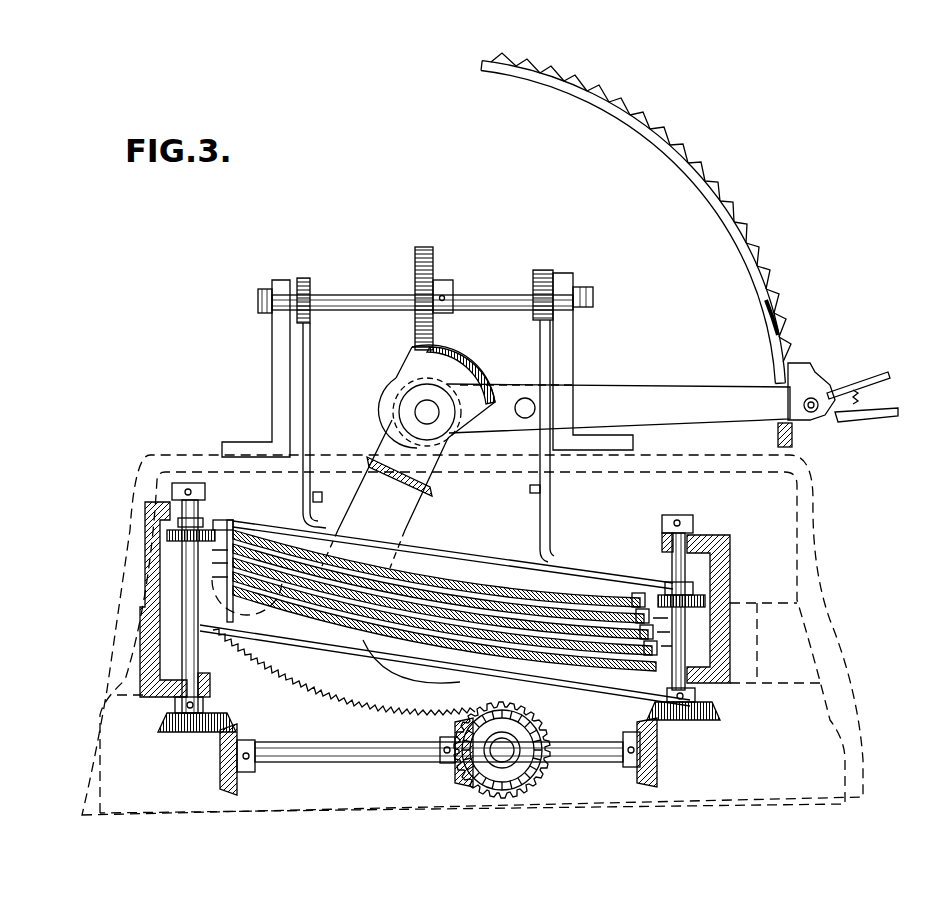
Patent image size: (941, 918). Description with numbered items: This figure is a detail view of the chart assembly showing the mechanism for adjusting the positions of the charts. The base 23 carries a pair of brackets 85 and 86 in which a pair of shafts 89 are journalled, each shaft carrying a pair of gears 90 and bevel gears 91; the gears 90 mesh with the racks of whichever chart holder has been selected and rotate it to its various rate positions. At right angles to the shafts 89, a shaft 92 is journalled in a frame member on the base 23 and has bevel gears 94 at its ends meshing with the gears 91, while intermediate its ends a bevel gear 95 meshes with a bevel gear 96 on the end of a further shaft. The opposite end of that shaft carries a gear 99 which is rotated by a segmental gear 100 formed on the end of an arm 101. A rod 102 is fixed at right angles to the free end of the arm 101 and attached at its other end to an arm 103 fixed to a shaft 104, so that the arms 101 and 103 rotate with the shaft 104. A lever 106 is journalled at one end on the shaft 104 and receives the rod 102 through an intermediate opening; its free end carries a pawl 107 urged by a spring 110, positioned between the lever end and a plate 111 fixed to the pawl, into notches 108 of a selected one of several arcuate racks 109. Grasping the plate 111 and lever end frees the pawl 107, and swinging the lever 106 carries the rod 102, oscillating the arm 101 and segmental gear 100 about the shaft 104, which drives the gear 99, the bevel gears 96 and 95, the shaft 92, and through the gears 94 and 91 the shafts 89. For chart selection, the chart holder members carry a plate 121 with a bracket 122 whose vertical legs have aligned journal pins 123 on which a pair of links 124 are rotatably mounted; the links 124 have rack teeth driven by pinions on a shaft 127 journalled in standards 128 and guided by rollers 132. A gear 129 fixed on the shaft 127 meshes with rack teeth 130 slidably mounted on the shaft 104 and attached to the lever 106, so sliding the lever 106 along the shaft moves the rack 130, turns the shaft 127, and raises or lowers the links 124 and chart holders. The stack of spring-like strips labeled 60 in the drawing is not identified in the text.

The base 23 is at (805, 484).
The leaf spring pack 60 is at (471, 598).
The bracket 85 is at (148, 504).
The bracket 86 is at (712, 540).
The shaft 89 is at (198, 662).
The gear 90 is at (160, 552).
The bevel gear 91 is at (166, 733).
The shaft 92 is at (338, 762).
The bevel gear 94 is at (238, 778).
The bevel gear 95 is at (465, 782).
The bevel gear 96 is at (527, 772).
The gear 99 is at (530, 728).
The segmental gear 100 is at (300, 673).
The arm 101 is at (433, 488).
The rod 102 is at (525, 398).
The arm 103 is at (503, 385).
The shaft 104 is at (427, 412).
The lever 106 is at (668, 397).
The pawl 107 is at (805, 362).
The notches 108 is at (757, 238).
The arcuate rack 109 is at (668, 158).
The spring 110 is at (862, 395).
The plate 111 is at (871, 378).
The plate 121 is at (205, 512).
The bracket 122 is at (406, 528).
The journal pin 123 is at (308, 505).
The link 124 is at (311, 388).
The shaft 127 is at (357, 305).
The standard 128 is at (280, 372).
The gear 129 is at (434, 259).
The rack teeth 130 is at (428, 362).
The guiding roller 132 is at (310, 278).